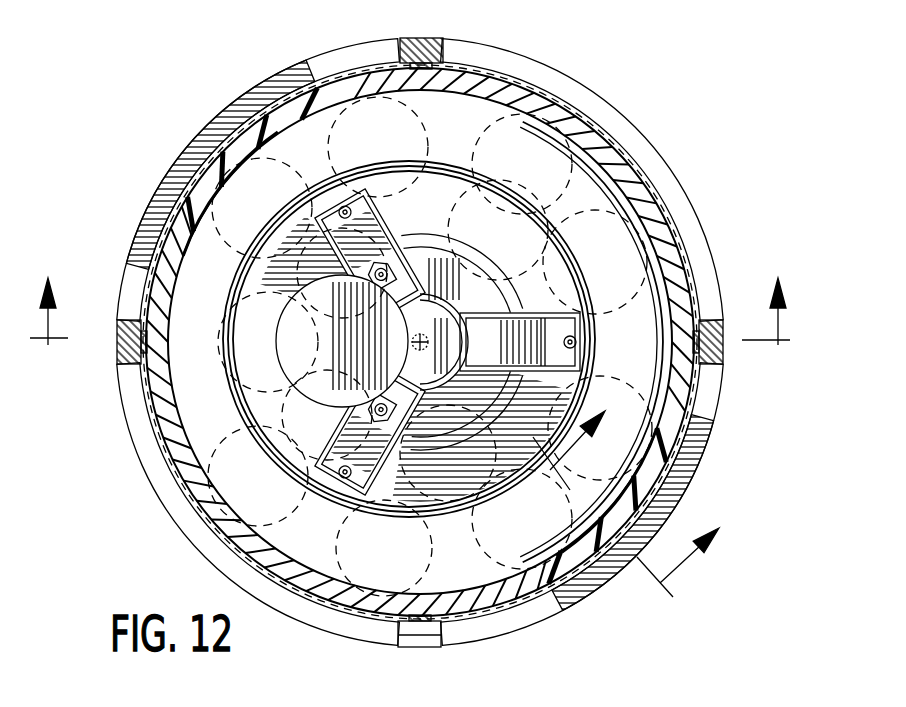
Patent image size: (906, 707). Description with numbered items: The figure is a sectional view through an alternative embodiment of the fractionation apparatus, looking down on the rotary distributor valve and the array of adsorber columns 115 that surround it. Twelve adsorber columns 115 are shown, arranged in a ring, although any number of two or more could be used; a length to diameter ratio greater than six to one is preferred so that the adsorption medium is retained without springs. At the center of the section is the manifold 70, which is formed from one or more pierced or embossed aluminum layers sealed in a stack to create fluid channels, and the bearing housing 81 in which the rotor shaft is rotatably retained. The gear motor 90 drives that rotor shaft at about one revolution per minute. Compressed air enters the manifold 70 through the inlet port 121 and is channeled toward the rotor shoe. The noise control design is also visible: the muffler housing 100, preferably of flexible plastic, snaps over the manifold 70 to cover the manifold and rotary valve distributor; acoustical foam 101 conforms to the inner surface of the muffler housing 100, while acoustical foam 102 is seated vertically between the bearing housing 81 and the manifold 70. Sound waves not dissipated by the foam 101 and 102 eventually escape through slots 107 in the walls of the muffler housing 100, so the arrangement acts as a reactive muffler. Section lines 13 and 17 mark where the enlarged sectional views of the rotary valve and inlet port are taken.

The manifold 70 is at (225, 110).
The muffler housing 100 is at (571, 110).
The acoustical foam 101 is at (606, 143).
The slots 107 is at (446, 44).
The adsorber columns 115 is at (455, 152).
The inlet port 121 is at (500, 520).
The acoustical foam 102 is at (473, 268).
The bearing housing 81 is at (497, 285).
The gear motor 90 is at (256, 390).
The section line 13- 13 is at (410, 295).
The section line 17- 17 is at (636, 491).